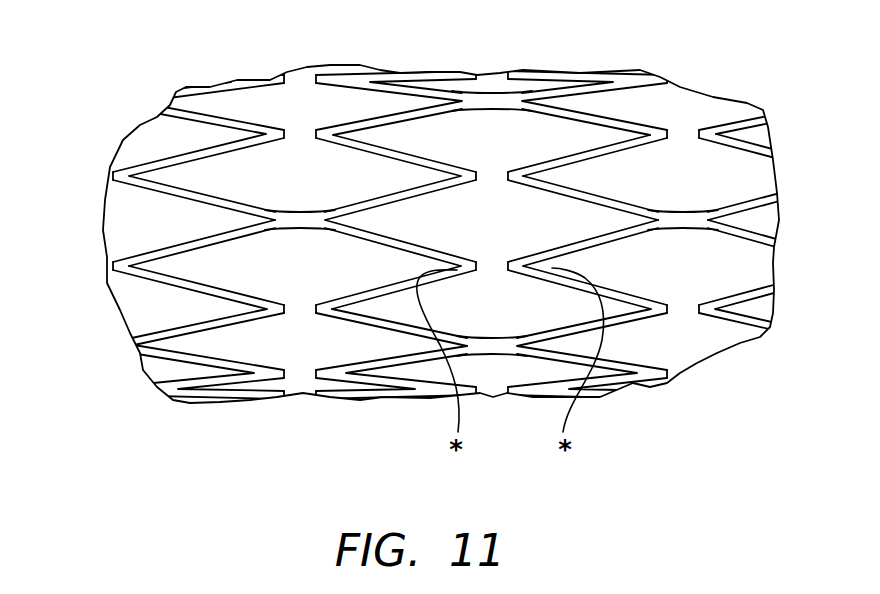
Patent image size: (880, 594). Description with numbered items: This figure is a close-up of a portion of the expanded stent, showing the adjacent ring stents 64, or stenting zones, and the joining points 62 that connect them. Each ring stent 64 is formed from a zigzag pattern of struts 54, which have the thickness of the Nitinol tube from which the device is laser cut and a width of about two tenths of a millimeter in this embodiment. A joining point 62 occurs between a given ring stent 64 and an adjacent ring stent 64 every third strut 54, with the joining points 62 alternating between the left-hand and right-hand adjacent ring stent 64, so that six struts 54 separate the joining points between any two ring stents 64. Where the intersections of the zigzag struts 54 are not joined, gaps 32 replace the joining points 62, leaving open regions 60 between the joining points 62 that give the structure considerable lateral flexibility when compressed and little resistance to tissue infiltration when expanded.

The ring stent 64 is at (87, 113).
The joining point 62 is at (300, 220).
The gap 32 is at (492, 172).
The open region 60 is at (680, 173).
The strut 54 is at (170, 250).